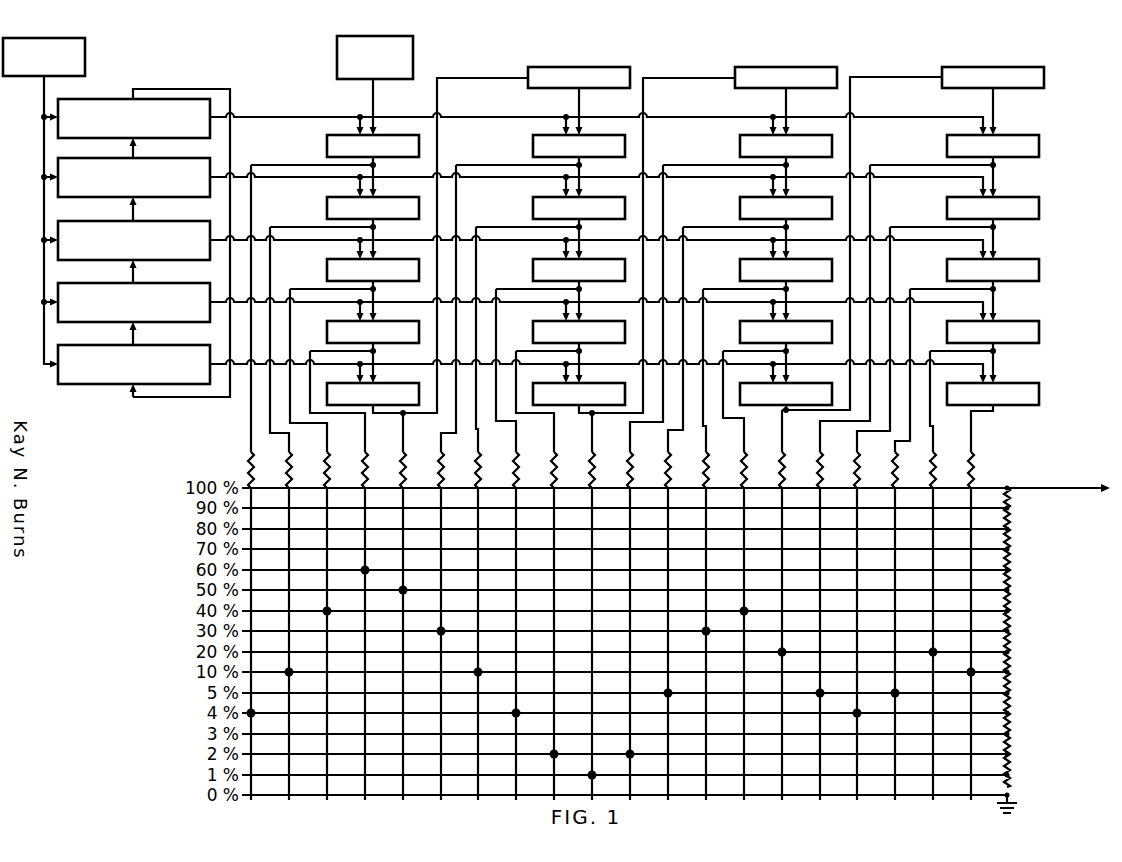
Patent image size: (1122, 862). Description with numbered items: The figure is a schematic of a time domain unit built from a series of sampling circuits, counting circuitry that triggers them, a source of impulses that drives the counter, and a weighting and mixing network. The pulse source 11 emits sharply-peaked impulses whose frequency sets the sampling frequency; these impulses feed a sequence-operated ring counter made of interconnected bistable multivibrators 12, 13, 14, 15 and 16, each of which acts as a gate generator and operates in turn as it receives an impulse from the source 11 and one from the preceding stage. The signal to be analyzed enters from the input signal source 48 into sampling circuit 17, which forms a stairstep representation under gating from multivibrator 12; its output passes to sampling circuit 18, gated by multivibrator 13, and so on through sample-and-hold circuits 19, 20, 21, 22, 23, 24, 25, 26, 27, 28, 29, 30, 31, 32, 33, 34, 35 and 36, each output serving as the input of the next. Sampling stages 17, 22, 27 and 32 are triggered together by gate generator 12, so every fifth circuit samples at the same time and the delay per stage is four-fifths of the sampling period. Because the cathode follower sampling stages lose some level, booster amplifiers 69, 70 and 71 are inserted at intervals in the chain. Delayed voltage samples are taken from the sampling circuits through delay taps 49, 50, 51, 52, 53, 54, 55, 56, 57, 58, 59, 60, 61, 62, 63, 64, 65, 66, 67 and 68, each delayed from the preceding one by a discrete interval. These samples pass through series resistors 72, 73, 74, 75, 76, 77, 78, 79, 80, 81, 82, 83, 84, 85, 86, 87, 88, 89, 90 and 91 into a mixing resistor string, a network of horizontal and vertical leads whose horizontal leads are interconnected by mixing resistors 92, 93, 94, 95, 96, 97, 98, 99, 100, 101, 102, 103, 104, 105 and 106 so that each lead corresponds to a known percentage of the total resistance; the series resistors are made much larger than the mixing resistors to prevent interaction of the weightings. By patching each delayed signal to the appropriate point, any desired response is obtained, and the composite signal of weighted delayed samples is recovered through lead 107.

The source of sharply-peaked electrical impulses 11 is at (85, 50).
The bistable multivibrator 12 is at (96, 97).
The bistable multivibrator 13 is at (96, 156).
The bistable multivibrator 14 is at (96, 219).
The bistable multivibrator 15 is at (96, 281).
The bistable multivibrator 16 is at (96, 343).
The sampling circuit 17 is at (347, 133).
The sampling circuit 18 is at (347, 195).
The sample-and-hold circuit 19 is at (347, 257).
The sample-and-hold circuit 20 is at (347, 319).
The sample-and-hold circuit 21 is at (347, 381).
The sampling stage 22 is at (553, 133).
The sample-and-hold circuit 23 is at (553, 195).
The sample-and-hold circuit 24 is at (553, 257).
The sample-and-hold circuit 25 is at (553, 319).
The sample-and-hold circuit 26 is at (553, 381).
The sampling stage 27 is at (760, 133).
The sample-and-hold circuit 28 is at (760, 195).
The sample-and-hold circuit 29 is at (760, 257).
The sample-and-hold circuit 30 is at (760, 319).
The sample-and-hold circuit 31 is at (760, 381).
The sampling stage 32 is at (967, 133).
The sample-and-hold circuit 33 is at (967, 195).
The sample-and-hold circuit 34 is at (967, 257).
The sample-and-hold circuit 35 is at (967, 319).
The sample-and-hold circuit 36 is at (967, 381).
The input signal source 48 is at (413, 52).
The delay tap 49 is at (253, 444).
The delay tap 50 is at (291, 444).
The delay tap 51 is at (329, 444).
The delay tap 52 is at (367, 444).
The delay tap 53 is at (405, 444).
The delay tap 54 is at (443, 444).
The delay tap 55 is at (480, 444).
The delay tap 56 is at (518, 444).
The delay tap 57 is at (556, 444).
The delay tap 58 is at (594, 444).
The delay tap 59 is at (632, 444).
The delay tap 60 is at (670, 444).
The delay tap 61 is at (708, 444).
The delay tap 62 is at (746, 444).
The delay tap 63 is at (784, 444).
The delay tap 64 is at (822, 444).
The delay tap 65 is at (859, 442).
The delay tap 66 is at (897, 455).
The delay tap 67 is at (935, 444).
The delay tap 68 is at (973, 444).
The amplifier 69 is at (596, 67).
The amplifier 70 is at (803, 67).
The amplifier 71 is at (1010, 67).
The series resistor 72 is at (249, 464).
The series resistor 73 is at (286, 469).
The series resistor 74 is at (324, 469).
The series resistor 75 is at (362, 469).
The series resistor 76 is at (400, 469).
The series resistor 77 is at (438, 469).
The series resistor 78 is at (475, 469).
The series resistor 79 is at (513, 469).
The series resistor 80 is at (551, 469).
The series resistor 81 is at (589, 469).
The series resistor 82 is at (627, 469).
The series resistor 83 is at (665, 469).
The series resistor 84 is at (703, 469).
The series resistor 85 is at (741, 469).
The series resistor 86 is at (779, 469).
The series resistor 87 is at (817, 469).
The series resistor 88 is at (854, 469).
The series resistor 89 is at (892, 469).
The series resistor 90 is at (930, 469).
The series resistor 91 is at (968, 469).
The mixing resistor 92 is at (1011, 495).
The mixing resistor 93 is at (1011, 515).
The mixing resistor 94 is at (1011, 536).
The mixing resistor 95 is at (1011, 556).
The mixing resistor 96 is at (1011, 577).
The mixing resistor 97 is at (1011, 597).
The mixing resistor 98 is at (1011, 618).
The mixing resistor 99 is at (1011, 638).
The mixing resistor 100 is at (1011, 659).
The mixing resistor 101 is at (1011, 679).
The mixing resistor 102 is at (1011, 700).
The mixing resistor 103 is at (1011, 720).
The mixing resistor 104 is at (1011, 741).
The mixing resistor 105 is at (1011, 761).
The mixing resistor 106 is at (1011, 782).
The lead 107 is at (1070, 491).